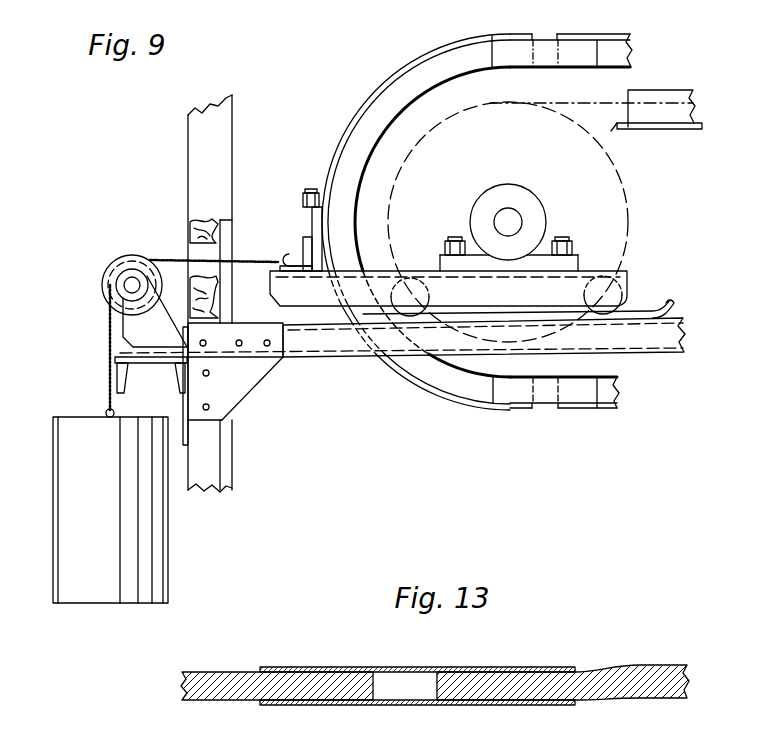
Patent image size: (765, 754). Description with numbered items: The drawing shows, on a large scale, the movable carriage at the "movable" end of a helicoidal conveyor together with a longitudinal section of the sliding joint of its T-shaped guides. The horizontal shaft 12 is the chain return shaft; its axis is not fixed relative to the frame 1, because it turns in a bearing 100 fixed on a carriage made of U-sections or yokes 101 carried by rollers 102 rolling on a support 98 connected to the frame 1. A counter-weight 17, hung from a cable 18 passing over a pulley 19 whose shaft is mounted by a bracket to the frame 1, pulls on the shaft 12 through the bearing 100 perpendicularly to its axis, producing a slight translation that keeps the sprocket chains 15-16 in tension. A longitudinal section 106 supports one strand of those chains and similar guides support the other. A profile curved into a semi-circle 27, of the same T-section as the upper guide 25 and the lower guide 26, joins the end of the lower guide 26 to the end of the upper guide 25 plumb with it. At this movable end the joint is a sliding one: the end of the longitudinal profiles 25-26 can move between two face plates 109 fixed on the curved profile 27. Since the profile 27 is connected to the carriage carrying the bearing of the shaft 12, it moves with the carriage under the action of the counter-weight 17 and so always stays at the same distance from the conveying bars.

In FIG. 9, the frame 1 is at (236, 423).
In FIG. 9, the horizontal shaft 12 is at (505, 210).
In FIG. 9, the sprocket chains 15-16 is at (567, 102).
In FIG. 9, the counter-weight 17 is at (165, 566).
In FIG. 9, the cable 18 is at (107, 341).
In FIG. 9, the pulley 19 is at (110, 257).
In FIG. 9, the upper guide 25 is at (592, 36).
In FIG. 9, the lower guide 26 is at (597, 406).
In FIG. 9, the semi-circular curved profile 27 is at (380, 89).
In FIG. 13, the semi-circular curved profile 27 is at (248, 680).
In FIG. 9, the support 98 is at (518, 298).
In FIG. 9, the bearing 100 is at (552, 221).
In FIG. 9, the U-sections or yokes 101 is at (367, 290).
In FIG. 9, the rollers 102 is at (444, 291).
In FIG. 9, the longitudinal section 106 is at (667, 128).
In FIG. 9, the face plates 109 is at (545, 48).
In FIG. 13, the face plates 109 is at (405, 670).
In FIG. 13, the longitudinal profiles 25-26 is at (642, 667).